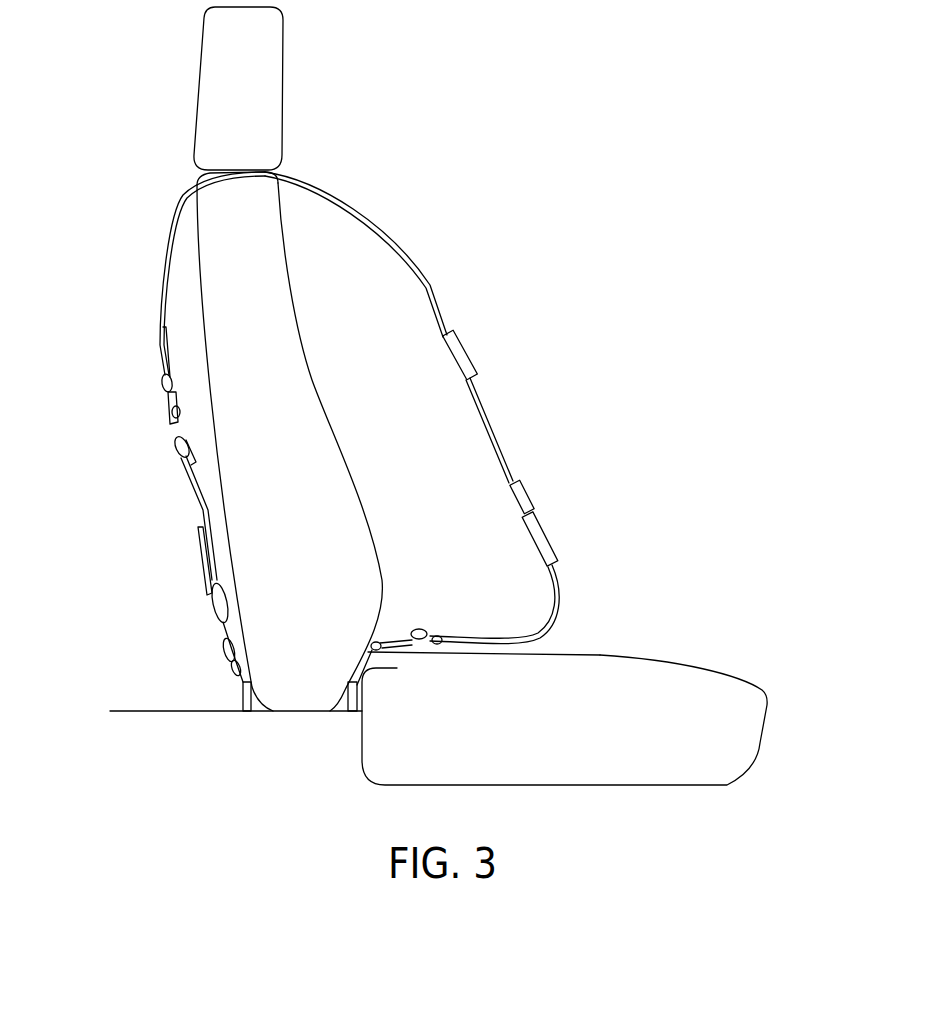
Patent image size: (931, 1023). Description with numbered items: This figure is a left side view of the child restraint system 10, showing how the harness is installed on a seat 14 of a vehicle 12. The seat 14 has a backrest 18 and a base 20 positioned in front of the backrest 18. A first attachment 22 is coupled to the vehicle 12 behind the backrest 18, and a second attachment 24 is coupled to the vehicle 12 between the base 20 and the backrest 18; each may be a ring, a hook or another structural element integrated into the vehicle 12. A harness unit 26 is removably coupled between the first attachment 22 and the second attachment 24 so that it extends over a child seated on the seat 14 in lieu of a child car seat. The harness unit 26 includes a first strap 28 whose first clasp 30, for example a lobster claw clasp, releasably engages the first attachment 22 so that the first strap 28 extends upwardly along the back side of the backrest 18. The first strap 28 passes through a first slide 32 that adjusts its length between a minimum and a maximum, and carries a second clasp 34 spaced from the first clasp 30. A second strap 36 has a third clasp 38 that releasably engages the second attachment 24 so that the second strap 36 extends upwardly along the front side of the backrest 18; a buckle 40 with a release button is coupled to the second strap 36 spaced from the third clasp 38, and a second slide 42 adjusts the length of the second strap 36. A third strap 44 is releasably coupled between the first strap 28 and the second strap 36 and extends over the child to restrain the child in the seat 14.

The child restraint system 10 is at (522, 232).
The vehicle 12 is at (118, 710).
The seat 14 is at (695, 660).
The backrest 18 is at (197, 268).
The base 20 is at (645, 660).
The first attachment 22 is at (243, 702).
The second attachment 24 is at (353, 708).
The harness unit 26 is at (440, 286).
The first strap 28 is at (208, 566).
The first clasp 30 is at (233, 664).
The first slide 32 is at (220, 612).
The second clasp 34 is at (163, 420).
The second strap 36 is at (565, 578).
The third clasp 38 is at (397, 668).
The buckle 40 is at (548, 530).
The second slide 42 is at (419, 628).
The third strap 44 is at (412, 267).